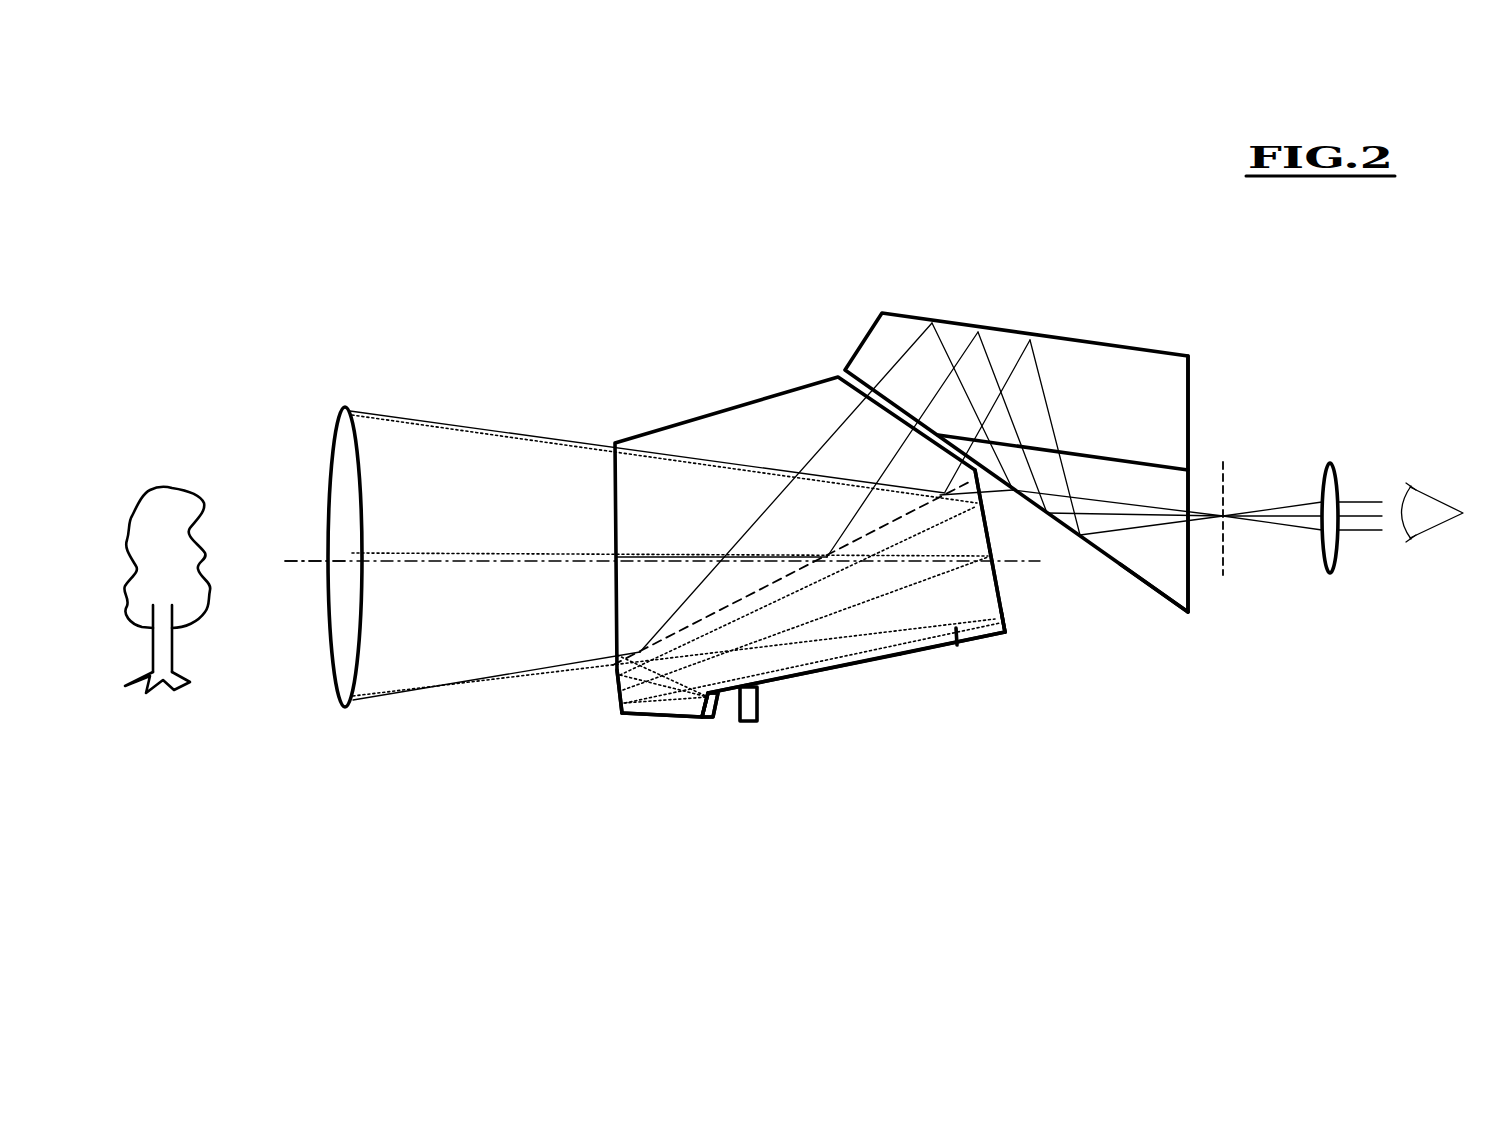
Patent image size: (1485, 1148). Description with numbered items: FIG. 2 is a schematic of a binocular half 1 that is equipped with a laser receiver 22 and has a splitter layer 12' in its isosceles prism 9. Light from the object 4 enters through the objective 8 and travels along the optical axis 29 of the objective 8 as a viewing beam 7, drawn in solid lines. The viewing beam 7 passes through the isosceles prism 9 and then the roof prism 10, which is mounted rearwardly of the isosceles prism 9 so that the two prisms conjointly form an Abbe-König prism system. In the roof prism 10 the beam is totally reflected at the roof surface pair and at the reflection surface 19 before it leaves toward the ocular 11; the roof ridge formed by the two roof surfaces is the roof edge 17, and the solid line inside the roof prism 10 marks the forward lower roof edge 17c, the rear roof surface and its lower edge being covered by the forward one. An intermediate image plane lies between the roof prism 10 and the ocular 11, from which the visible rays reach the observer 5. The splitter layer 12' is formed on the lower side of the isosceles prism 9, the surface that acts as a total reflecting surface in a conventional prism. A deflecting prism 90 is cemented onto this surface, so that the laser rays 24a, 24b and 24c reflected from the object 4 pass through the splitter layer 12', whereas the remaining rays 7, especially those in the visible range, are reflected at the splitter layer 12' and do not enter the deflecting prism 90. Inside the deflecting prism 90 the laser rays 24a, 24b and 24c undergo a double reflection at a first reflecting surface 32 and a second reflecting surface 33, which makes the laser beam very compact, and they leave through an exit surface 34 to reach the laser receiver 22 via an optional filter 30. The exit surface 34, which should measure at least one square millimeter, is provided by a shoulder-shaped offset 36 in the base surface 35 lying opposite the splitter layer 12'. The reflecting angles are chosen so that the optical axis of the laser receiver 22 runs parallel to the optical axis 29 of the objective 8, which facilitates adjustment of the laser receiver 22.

The optical system 1 is at (788, 327).
The object 4 is at (165, 710).
The observer 5 is at (1438, 568).
The viewing beam 7 is at (1408, 548).
The objective 8 is at (347, 662).
The isosceles prism 9 is at (716, 430).
The roof prism 10 is at (1132, 403).
The ocular 11 is at (1338, 560).
The splitter layer 12' is at (915, 662).
The roof edge 17 is at (1066, 342).
The forward lower roof edge 17c is at (1160, 465).
The reflection surface 19 is at (1152, 588).
The laser receiver 22 is at (750, 702).
The laser ray 24a is at (983, 503).
The laser ray 24b is at (958, 560).
The laser ray 24c is at (957, 645).
The optical axis 29 is at (303, 558).
The filter 30 is at (708, 712).
The first reflecting surface 32 is at (1001, 608).
The second reflecting surface 33 is at (617, 700).
The exit surface 34 is at (683, 703).
The shoulder-shaped offset 36 is at (647, 808).
The base surface 35 is at (803, 680).
The deflecting prism 90 is at (842, 588).